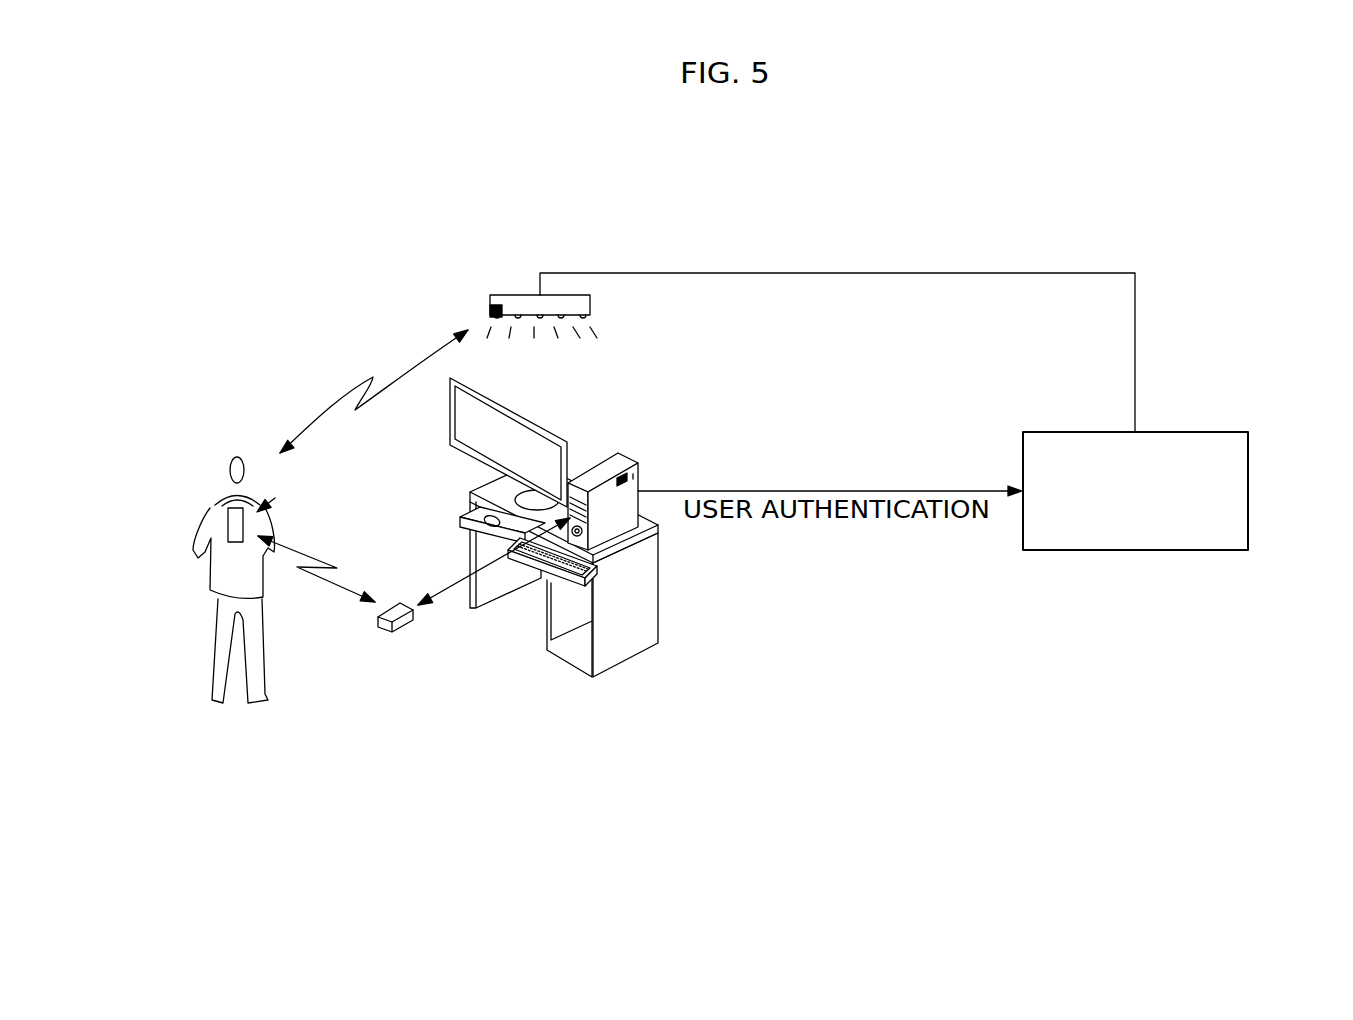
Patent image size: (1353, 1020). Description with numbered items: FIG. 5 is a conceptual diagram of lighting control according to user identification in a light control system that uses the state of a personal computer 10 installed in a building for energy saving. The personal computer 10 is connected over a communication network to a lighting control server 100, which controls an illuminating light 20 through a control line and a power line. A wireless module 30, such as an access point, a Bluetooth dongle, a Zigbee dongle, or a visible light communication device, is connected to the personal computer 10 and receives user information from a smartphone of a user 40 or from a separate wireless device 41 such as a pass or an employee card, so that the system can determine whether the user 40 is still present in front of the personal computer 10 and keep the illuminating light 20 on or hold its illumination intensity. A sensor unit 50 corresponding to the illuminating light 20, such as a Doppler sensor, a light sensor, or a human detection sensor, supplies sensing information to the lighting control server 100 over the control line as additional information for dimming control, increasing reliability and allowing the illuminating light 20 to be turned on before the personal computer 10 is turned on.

The personal computer 10 is at (632, 458).
The illuminating light 20 is at (590, 305).
The wireless module 30 is at (413, 624).
The user 40 is at (258, 648).
The wireless device 41 is at (210, 508).
The sensor unit 50 is at (490, 305).
The lighting control server 100 is at (1248, 490).